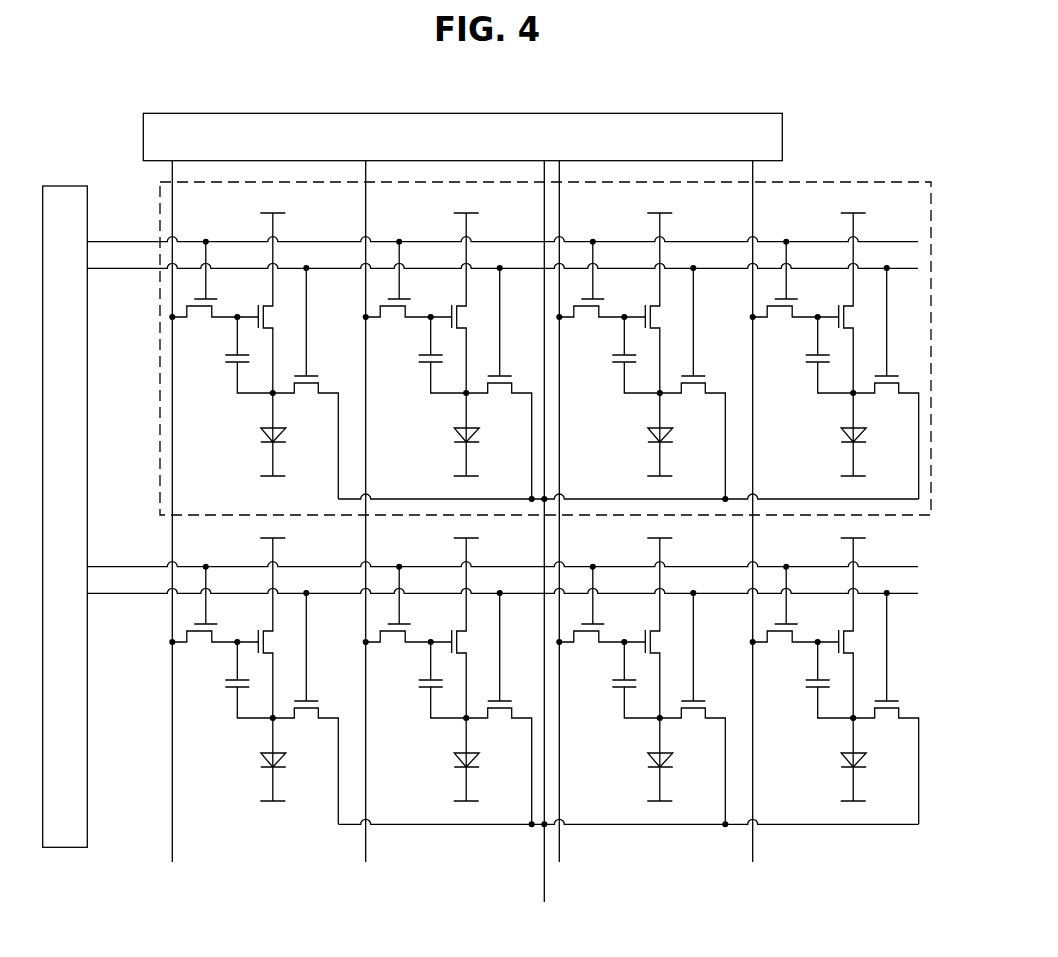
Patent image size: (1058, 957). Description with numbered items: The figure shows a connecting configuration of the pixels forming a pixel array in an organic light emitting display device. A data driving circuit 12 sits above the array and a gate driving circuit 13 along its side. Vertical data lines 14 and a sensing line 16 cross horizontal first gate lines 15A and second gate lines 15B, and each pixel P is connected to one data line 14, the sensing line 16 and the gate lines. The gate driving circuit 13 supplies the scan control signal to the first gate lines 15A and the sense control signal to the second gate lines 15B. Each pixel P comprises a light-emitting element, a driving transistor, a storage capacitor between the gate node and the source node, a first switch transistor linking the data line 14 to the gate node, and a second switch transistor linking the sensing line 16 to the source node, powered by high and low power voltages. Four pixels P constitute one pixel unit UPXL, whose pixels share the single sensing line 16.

The data driving circuit 12 is at (452, 146).
The gate driving circuit 13 is at (53, 530).
The data line 14 is at (463, 524).
The first gate line 15A is at (125, 565).
The second gate line 15B is at (122, 271).
The sensing line 16 is at (545, 545).
The pixel unit UPXL is at (880, 181).
The pixel P is at (185, 497).